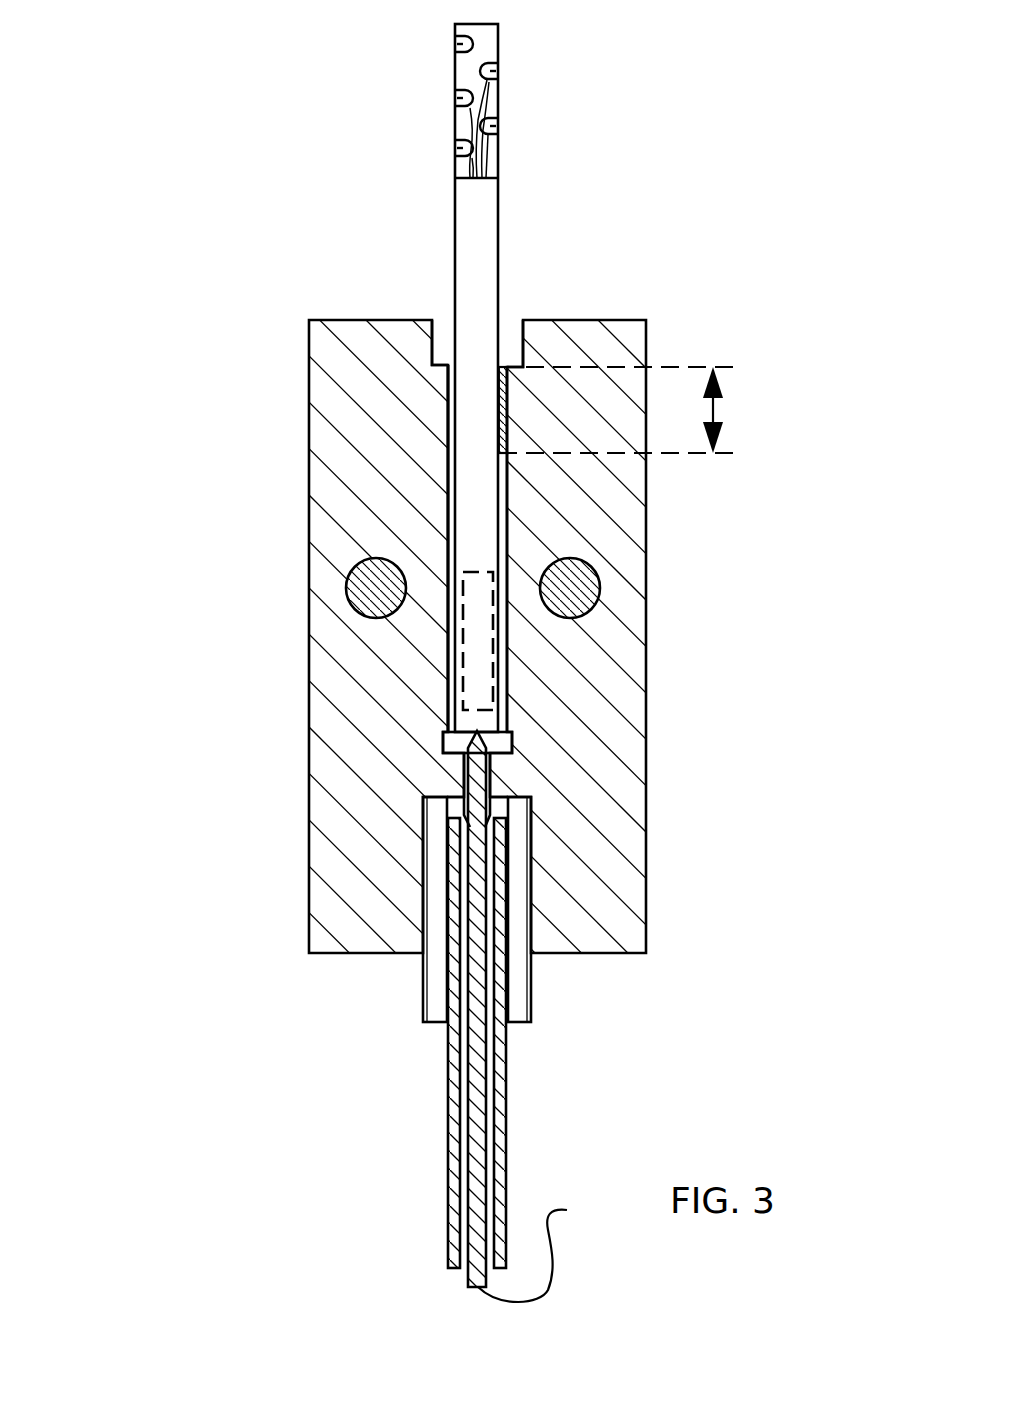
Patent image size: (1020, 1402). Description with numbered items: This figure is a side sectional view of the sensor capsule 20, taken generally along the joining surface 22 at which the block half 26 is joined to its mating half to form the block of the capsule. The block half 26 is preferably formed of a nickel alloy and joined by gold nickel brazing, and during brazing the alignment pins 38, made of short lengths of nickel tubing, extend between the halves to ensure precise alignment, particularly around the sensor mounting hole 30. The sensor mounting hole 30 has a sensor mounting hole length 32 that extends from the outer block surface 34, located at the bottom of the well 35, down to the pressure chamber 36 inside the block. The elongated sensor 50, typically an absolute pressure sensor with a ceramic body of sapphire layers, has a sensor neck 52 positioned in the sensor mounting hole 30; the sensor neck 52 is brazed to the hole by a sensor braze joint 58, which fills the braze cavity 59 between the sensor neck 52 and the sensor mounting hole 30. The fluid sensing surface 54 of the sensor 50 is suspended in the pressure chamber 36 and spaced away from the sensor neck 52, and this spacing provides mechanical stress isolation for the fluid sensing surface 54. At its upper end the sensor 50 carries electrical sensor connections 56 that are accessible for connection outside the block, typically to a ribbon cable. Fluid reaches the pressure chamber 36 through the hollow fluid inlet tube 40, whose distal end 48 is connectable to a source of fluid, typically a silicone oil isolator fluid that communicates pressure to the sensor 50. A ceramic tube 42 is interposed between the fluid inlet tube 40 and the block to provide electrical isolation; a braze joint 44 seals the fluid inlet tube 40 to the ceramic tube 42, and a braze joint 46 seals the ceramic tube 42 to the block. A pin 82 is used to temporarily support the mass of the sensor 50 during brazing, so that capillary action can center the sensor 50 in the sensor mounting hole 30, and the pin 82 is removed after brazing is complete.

The sensor capsule 20 is at (160, 83).
The joining surface 22 is at (377, 868).
The block half 26 is at (562, 522).
The sensor mounting hole 30 is at (398, 365).
The sensor mounting hole length 32 is at (713, 367).
The outer block surface 34 is at (438, 363).
The well 35 is at (523, 300).
The pressure chamber 36 is at (450, 468).
The alignment pin 38 is at (365, 585).
The fluid inlet tube 40 is at (455, 1130).
The ceramic tube 42 is at (438, 993).
The braze joint 44 is at (510, 994).
The braze joint 46 is at (527, 923).
The distal end 48 is at (452, 1258).
The sensor 50 is at (483, 500).
The sensor neck 52 is at (470, 418).
The fluid sensing surface 54 is at (492, 668).
The electrical sensor connections 56 is at (483, 126).
The sensor braze joint 58 is at (637, 502).
The braze cavity 59 is at (505, 410).
The pin 82 is at (545, 1250).